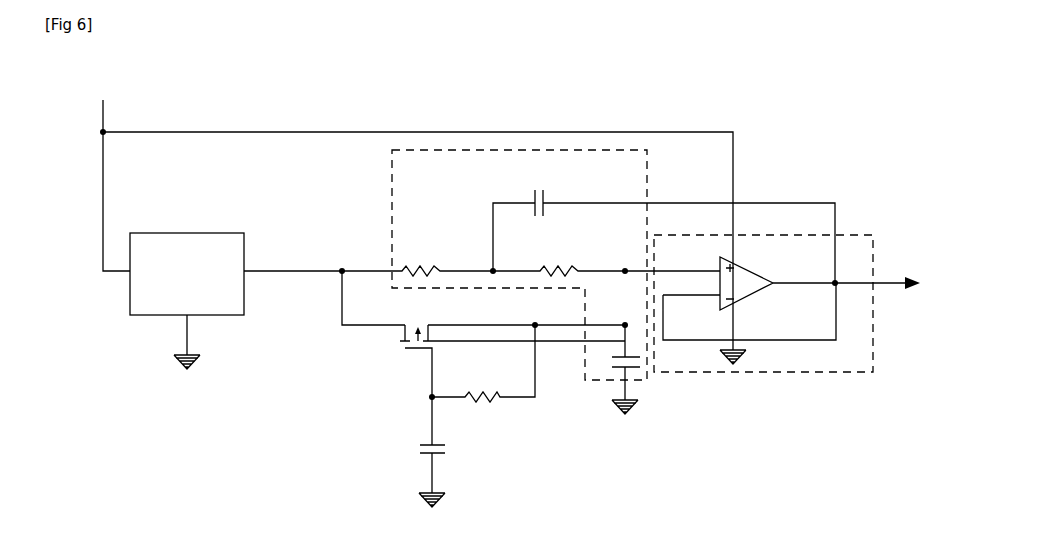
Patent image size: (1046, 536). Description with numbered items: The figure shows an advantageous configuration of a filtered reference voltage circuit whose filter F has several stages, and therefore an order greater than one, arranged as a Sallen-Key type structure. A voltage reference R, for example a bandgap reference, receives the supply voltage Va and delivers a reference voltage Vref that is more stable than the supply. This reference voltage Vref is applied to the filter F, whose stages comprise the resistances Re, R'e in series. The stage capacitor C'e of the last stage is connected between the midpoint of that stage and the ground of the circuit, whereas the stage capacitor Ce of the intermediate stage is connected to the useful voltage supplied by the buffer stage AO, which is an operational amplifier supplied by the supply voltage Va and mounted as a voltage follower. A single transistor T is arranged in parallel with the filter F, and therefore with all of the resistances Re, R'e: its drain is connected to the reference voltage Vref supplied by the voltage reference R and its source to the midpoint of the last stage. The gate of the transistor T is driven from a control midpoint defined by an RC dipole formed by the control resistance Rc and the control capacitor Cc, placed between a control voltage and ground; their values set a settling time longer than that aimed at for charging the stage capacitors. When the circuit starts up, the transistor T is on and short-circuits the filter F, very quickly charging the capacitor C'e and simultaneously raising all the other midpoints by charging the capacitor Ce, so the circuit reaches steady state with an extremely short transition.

The supply voltage Va is at (410, 211).
The reference voltage Vref is at (293, 270).
The voltage reference R is at (187, 301).
The filter F is at (611, 150).
The resistance Re is at (419, 257).
The resistance R'e is at (560, 257).
The stage capacitor Ce is at (665, 225).
The stage capacitor C'e is at (597, 399).
The transistor T is at (385, 357).
The control resistance Rc is at (482, 363).
The control capacitor Cc is at (451, 452).
The buffer stage AO is at (860, 372).